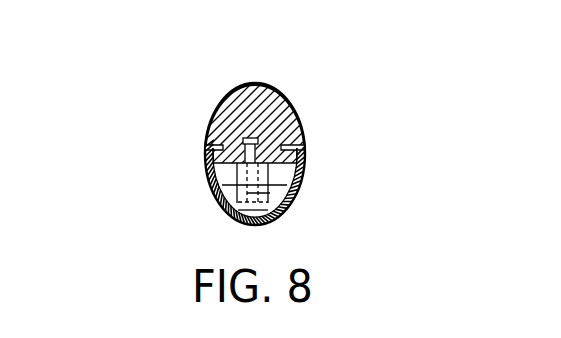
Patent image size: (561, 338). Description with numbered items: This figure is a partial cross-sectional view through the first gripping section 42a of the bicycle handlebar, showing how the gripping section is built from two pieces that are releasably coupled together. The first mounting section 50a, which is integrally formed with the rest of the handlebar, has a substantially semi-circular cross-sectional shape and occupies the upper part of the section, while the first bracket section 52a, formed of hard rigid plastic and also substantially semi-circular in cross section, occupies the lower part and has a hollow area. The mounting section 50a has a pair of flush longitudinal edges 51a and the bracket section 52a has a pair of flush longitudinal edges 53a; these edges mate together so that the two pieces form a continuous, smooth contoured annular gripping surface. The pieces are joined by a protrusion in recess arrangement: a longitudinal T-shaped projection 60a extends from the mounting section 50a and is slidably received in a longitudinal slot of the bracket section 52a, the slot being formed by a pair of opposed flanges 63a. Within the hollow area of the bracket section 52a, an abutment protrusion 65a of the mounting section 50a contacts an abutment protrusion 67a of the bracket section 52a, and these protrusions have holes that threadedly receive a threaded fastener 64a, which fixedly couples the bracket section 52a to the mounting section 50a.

The first gripping section 42a is at (215, 90).
The first mounting section 50a is at (288, 100).
The opposed flanges 63a is at (210, 126).
The longitudinal edges 51a is at (206, 144).
The longitudinal edges 53a is at (206, 151).
The longitudinal T-shaped projection 60a is at (236, 180).
The abutment protrusion 65a is at (210, 189).
The threaded fastener 64a is at (215, 197).
The first bracket section 52a is at (298, 190).
The abutment protrusion 67a is at (294, 196).